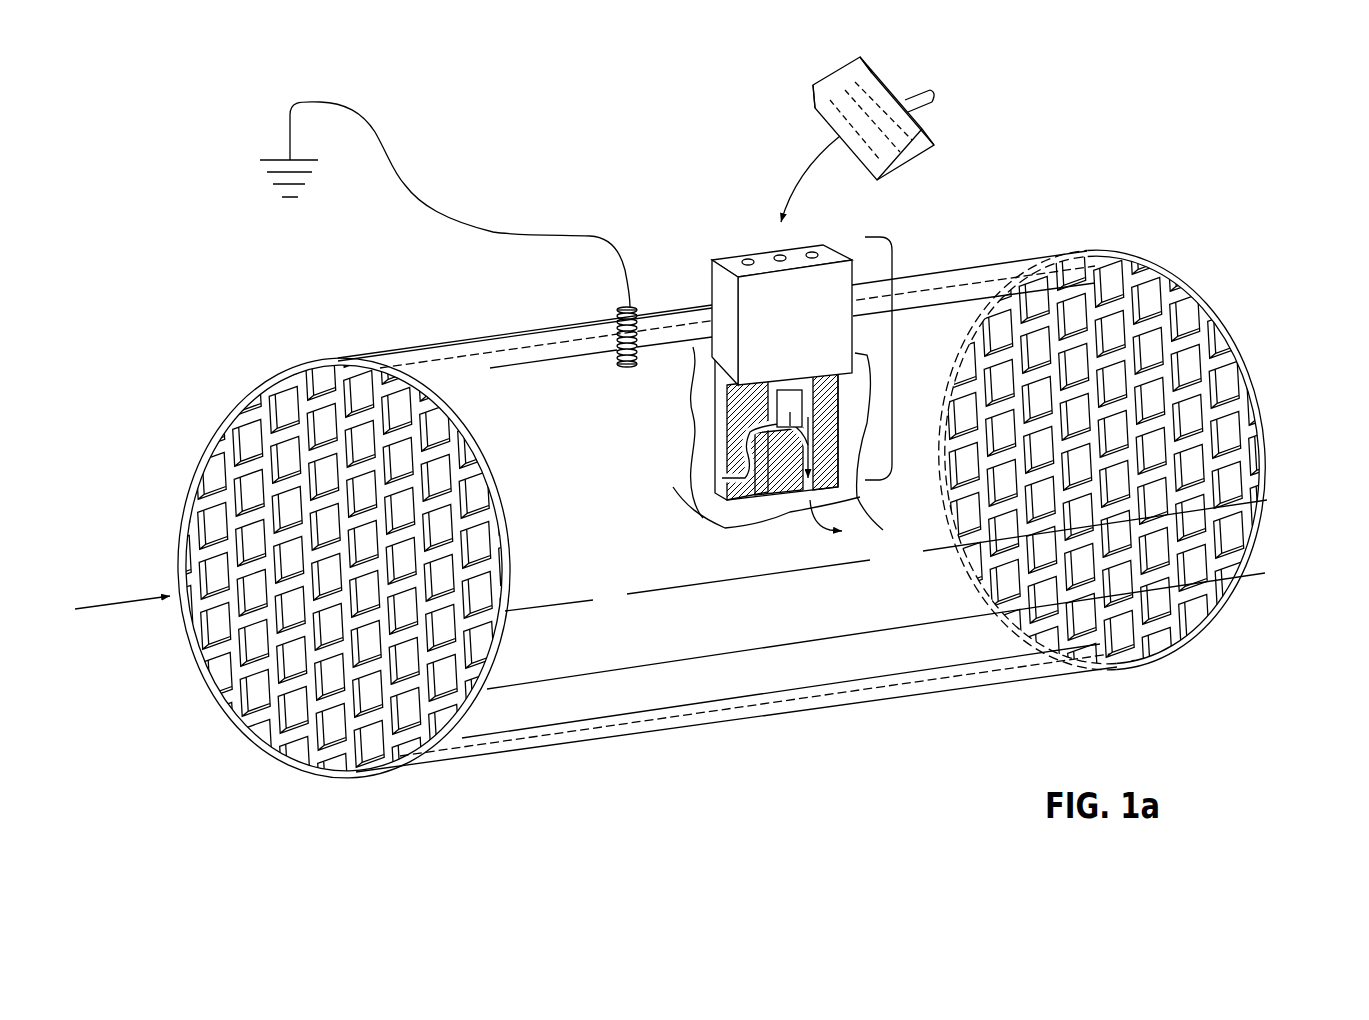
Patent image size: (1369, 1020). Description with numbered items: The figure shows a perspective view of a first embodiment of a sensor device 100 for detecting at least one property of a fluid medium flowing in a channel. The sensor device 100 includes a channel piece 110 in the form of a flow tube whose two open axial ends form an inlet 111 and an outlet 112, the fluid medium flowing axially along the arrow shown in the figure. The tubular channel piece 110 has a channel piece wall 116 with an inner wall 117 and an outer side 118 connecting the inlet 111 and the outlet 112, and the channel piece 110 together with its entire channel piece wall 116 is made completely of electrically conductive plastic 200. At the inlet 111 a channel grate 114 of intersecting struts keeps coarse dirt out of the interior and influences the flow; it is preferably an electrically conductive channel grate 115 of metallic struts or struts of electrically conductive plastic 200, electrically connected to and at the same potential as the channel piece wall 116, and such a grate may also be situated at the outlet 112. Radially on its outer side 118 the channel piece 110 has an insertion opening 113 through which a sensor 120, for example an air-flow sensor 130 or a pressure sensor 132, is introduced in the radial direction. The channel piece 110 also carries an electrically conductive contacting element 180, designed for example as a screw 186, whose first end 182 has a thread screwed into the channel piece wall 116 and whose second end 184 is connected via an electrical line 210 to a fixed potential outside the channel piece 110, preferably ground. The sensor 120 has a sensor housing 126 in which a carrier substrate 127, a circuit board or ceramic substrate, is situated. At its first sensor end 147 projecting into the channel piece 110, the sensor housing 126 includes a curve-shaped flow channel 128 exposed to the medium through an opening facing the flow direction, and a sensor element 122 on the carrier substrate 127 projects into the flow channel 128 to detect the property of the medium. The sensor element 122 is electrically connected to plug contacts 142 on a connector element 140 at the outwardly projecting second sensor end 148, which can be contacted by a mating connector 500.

The sensor device 100 is at (686, 514).
The channel piece 110 is at (762, 657).
The inlet 111 is at (215, 477).
The outlet 112 is at (1232, 325).
The insertion opening 113 is at (749, 299).
The channel grate 114 is at (699, 513).
The electrically conductive channel grate 115 is at (257, 680).
The channel piece wall 116 is at (133, 637).
The inner wall 117 is at (574, 731).
The outer side 118 is at (586, 745).
The sensor 120 is at (837, 385).
The sensor element 122 is at (784, 500).
The sensor housing 126 is at (712, 258).
The carrier substrate 127 is at (715, 416).
The flow channel 128 is at (727, 500).
The air-flow sensor 130 is at (837, 385).
The pressure sensor 132 is at (837, 385).
The connector element 140 is at (807, 240).
The plug contacts 142 is at (748, 247).
The first sensor end 147 is at (836, 492).
The second sensor end 148 is at (757, 243).
The contacting element 180 is at (549, 325).
The first end 182 is at (597, 382).
The second end 184 is at (618, 306).
The screw 186 is at (549, 325).
The electrically conductive plastic 200 is at (197, 632).
The electrical line 210 is at (397, 168).
The mating connector 500 is at (800, 92).